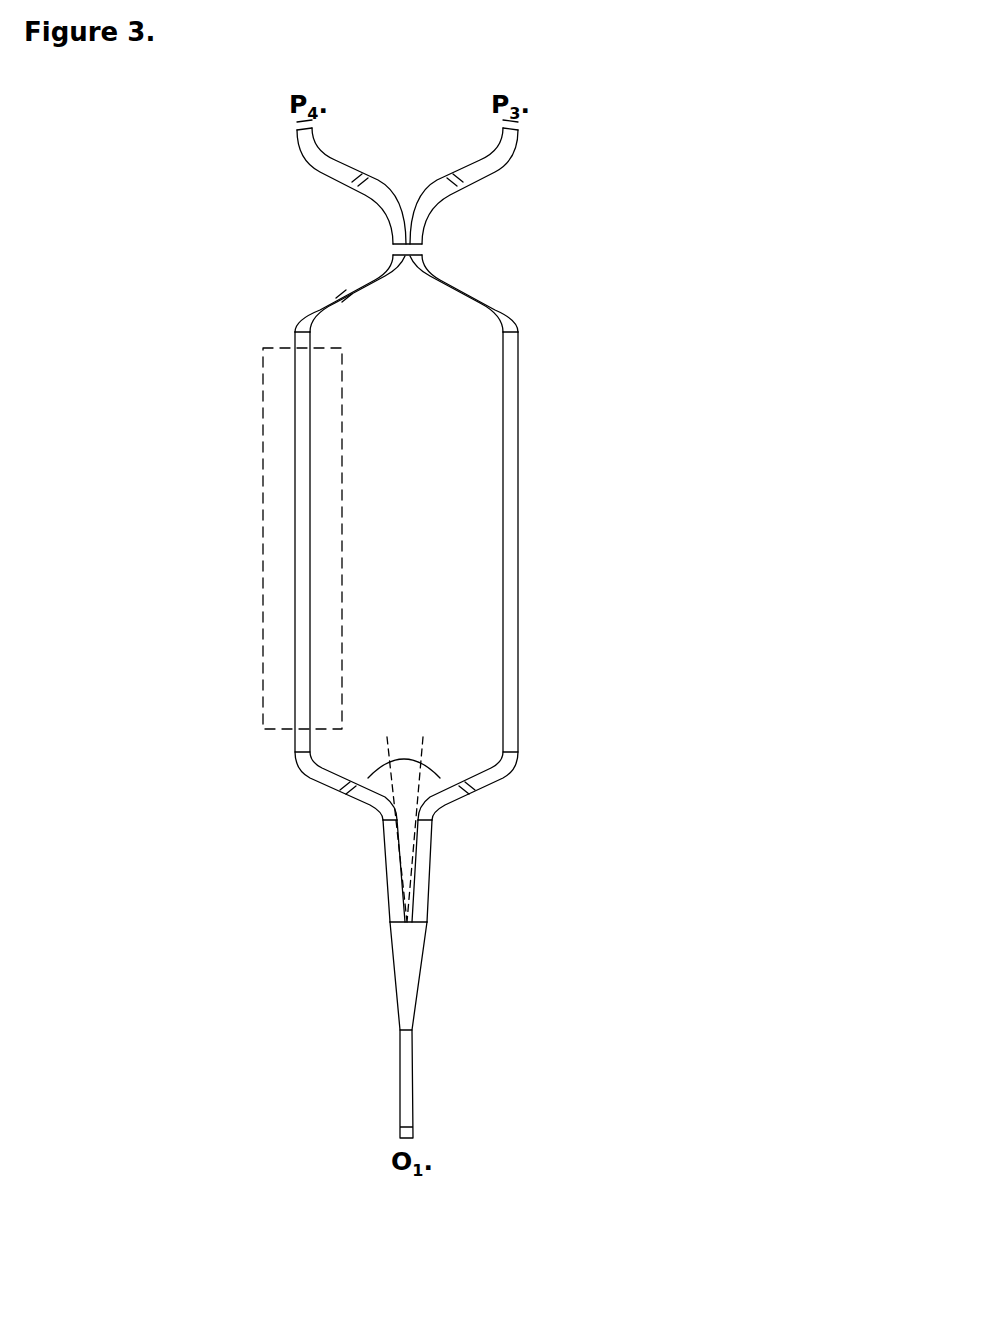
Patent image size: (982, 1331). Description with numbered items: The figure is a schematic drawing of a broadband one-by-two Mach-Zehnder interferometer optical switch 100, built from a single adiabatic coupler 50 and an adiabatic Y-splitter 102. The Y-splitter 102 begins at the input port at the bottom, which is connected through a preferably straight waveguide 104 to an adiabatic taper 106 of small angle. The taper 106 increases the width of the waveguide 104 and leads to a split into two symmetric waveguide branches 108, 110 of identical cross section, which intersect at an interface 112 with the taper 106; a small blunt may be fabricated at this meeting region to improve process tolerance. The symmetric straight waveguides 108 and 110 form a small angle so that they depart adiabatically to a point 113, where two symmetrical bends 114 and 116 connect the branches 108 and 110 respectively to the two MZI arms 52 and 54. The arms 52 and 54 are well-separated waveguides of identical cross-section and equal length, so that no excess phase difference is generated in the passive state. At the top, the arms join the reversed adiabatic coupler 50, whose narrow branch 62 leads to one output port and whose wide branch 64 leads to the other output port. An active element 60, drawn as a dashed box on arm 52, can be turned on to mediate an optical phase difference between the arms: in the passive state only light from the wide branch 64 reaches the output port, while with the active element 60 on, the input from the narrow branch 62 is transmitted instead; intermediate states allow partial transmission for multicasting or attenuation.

The adiabatic coupler 50 is at (531, 226).
The MZI arm 52 is at (294, 598).
The MZI arm 54 is at (518, 580).
The active element 60 is at (260, 502).
The narrow branch 62 is at (432, 224).
The wide branch 64 is at (380, 226).
The 1×2 switch 100 is at (504, 542).
The Y-splitter 102 is at (501, 937).
The waveguide 104 is at (416, 1067).
The adiabatic taper 106 is at (419, 982).
The waveguide branch 108 is at (376, 872).
The waveguide branch 110 is at (429, 872).
The interface 112 is at (428, 922).
The point 113 is at (432, 821).
The bend 114 is at (346, 797).
The bend 116 is at (481, 788).